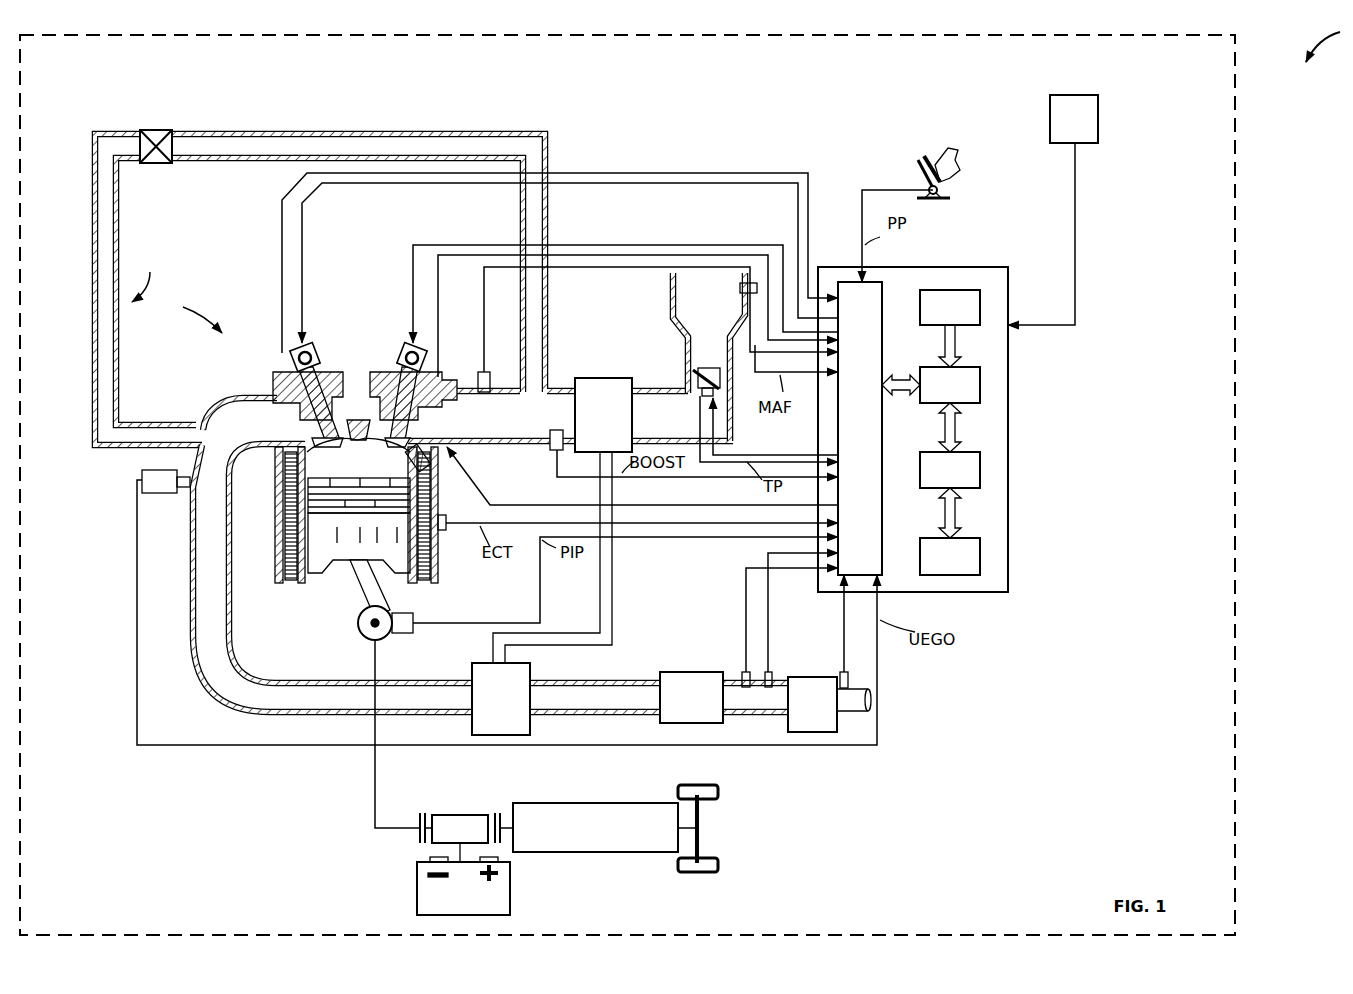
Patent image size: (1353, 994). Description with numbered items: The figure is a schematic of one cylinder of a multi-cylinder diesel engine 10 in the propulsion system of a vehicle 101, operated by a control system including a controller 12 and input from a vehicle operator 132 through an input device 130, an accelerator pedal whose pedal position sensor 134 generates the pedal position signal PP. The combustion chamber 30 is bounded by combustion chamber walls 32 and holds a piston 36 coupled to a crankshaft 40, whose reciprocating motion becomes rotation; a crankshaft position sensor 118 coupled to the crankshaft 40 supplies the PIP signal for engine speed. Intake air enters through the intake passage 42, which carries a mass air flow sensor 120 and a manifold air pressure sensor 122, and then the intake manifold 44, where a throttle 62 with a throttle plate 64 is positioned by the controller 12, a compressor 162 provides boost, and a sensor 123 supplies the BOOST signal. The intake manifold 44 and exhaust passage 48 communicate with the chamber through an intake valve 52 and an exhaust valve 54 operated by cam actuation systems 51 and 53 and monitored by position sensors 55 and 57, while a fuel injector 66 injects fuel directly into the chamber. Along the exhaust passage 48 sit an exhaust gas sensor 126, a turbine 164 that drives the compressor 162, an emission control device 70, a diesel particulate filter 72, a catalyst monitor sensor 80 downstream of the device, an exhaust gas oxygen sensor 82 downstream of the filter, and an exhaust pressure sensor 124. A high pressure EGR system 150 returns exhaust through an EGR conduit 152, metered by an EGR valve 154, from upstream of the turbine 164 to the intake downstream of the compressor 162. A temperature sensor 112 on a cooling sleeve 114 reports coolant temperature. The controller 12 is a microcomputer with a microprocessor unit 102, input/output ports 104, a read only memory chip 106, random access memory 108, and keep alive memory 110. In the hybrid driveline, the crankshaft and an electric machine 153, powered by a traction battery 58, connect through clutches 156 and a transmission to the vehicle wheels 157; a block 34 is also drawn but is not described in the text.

The vehicle 101 is at (1237, 190).
The internal combustion engine 10 is at (191, 312).
The controller 12 is at (998, 262).
The combustion chamber 30 is at (357, 453).
The combustion chamber walls 32 is at (310, 577).
The input device 34 is at (1053, 210).
The piston 36 is at (350, 533).
The crankshaft 40 is at (365, 640).
The intake passage 42 is at (709, 357).
The intake manifold 44 is at (570, 416).
The exhaust passage 48 is at (490, 555).
The cam actuation system 51 is at (403, 346).
The intake valve 52 is at (395, 432).
The cam actuation system 53 is at (313, 346).
The exhaust valve 54 is at (293, 420).
The position sensor 55 is at (427, 360).
The position sensor 57 is at (297, 358).
The traction battery 58 is at (512, 895).
The throttle 62 is at (720, 384).
The throttle plate 64 is at (700, 372).
The fuel injector 66 is at (425, 466).
The emission control device 70 is at (691, 697).
The diesel particulate filter 72 is at (829, 704).
The catalyst monitor sensor 80 is at (744, 672).
The exhaust gas oxygen sensor 82 is at (843, 672).
The microprocessor unit 102 is at (982, 378).
The input/output ports 104 is at (883, 290).
The read only memory chip 106 is at (982, 303).
The random access memory 108 is at (982, 470).
The keep alive memory 110 is at (982, 553).
The temperature sensor 112 is at (447, 530).
The cooling sleeve 114 is at (427, 560).
The crankshaft position sensor 118 is at (405, 635).
The mass air flow sensor 120 is at (757, 283).
The manifold air pressure sensor 122 is at (480, 376).
The sensor 123 is at (553, 450).
The exhaust pressure sensor 124 is at (772, 672).
The exhaust gas sensor 126 is at (142, 475).
The input device 130 is at (917, 170).
The vehicle operator 132 is at (960, 158).
The pedal position sensor 134 is at (947, 188).
The high pressure EGR system 150 is at (147, 276).
The EGR conduit 152 is at (117, 247).
The electric machine 153 is at (455, 815).
The EGR valve 154 is at (157, 167).
The clutch 156 is at (420, 813).
The vehicle wheels 157 is at (700, 878).
The compressor 162 is at (603, 415).
The turbine 164 is at (501, 699).